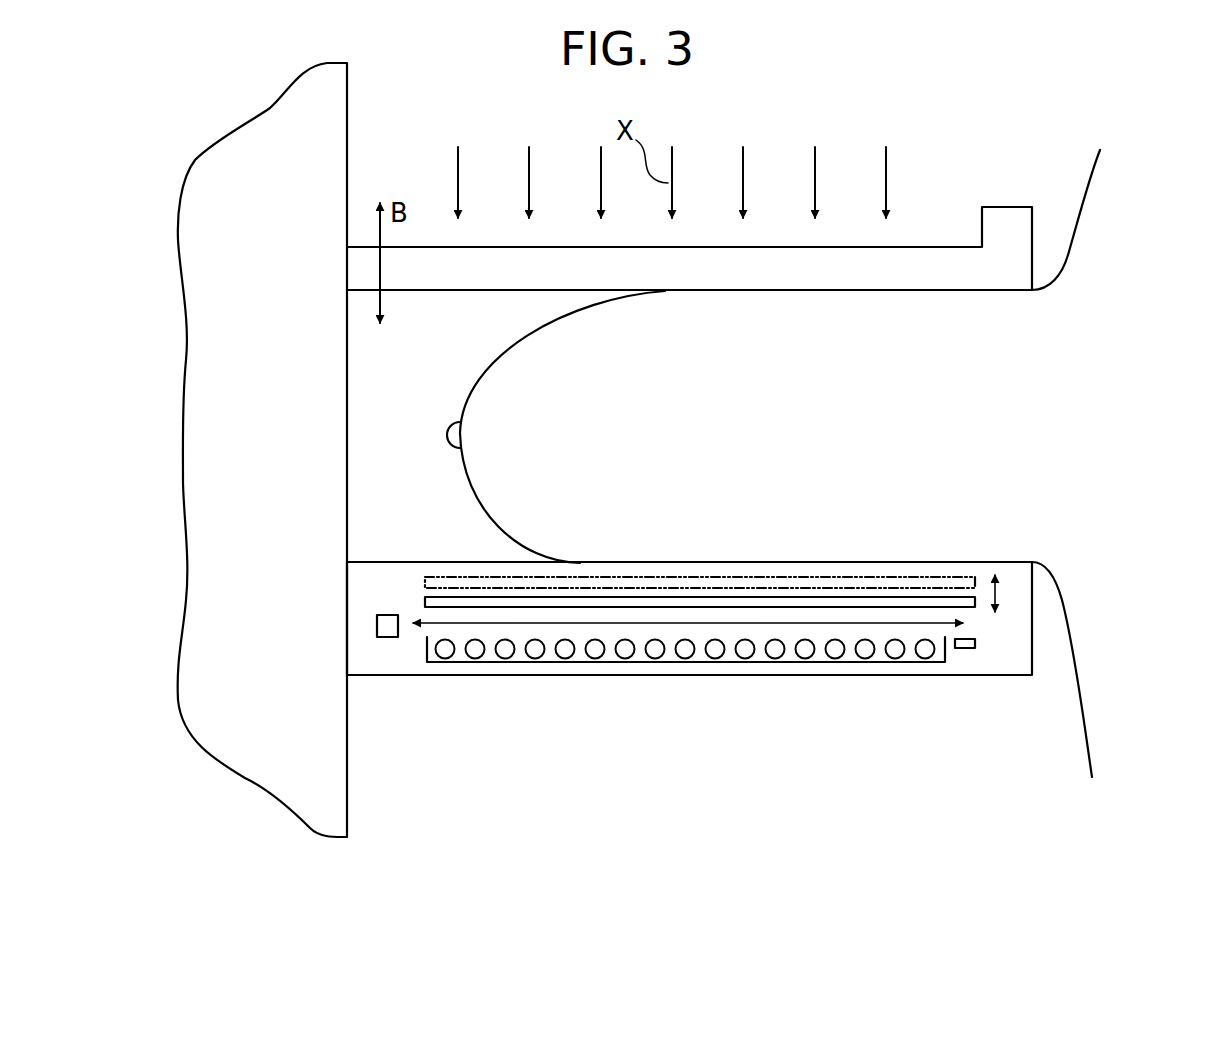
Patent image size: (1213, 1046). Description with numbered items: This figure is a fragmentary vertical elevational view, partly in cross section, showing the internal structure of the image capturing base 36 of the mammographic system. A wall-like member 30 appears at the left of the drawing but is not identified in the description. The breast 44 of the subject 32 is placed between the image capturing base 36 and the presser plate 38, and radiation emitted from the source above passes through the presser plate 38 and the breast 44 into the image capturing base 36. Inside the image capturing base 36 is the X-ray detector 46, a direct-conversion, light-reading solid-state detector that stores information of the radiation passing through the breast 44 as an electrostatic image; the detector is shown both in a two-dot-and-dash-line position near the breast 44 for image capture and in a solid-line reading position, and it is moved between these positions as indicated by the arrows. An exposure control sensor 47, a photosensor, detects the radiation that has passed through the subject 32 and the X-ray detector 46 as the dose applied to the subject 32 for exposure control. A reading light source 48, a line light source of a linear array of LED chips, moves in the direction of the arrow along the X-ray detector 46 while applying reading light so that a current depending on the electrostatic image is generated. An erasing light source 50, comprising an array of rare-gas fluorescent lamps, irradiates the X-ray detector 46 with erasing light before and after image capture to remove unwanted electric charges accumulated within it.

The gantry / support wall 30 is at (203, 432).
The subject 32 is at (1102, 663).
The image capturing base 36 is at (835, 685).
The presser plate 38 is at (1004, 227).
The breast 44 is at (497, 388).
The X-ray detector 46 is at (727, 578).
The exposure control sensor 47 is at (966, 648).
The reading light source 48 is at (385, 628).
The erasing light source 50 is at (628, 658).